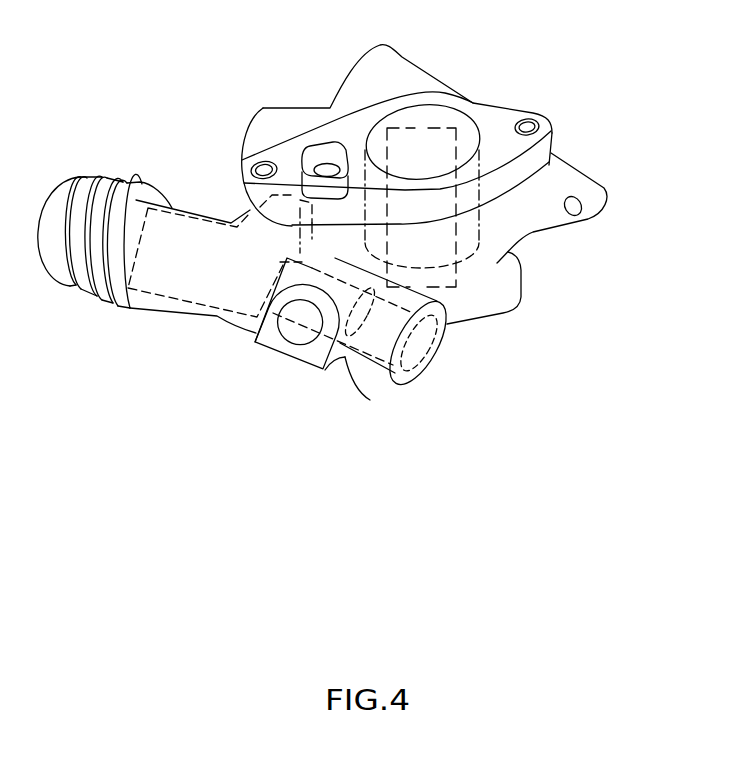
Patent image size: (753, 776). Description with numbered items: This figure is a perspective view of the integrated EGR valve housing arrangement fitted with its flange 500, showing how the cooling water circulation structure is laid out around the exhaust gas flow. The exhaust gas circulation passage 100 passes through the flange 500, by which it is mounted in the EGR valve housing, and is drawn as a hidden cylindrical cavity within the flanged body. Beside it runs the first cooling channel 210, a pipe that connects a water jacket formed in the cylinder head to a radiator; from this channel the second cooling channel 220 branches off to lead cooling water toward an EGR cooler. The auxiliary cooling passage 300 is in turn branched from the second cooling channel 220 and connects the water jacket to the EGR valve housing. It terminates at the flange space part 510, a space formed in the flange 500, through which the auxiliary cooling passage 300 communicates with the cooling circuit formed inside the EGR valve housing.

The exhaust gas circulation passage 100 is at (442, 122).
The first cooling channel 210 is at (163, 308).
The second cooling channel 220 is at (358, 353).
The auxiliary cooling passage 300 is at (247, 160).
The flange 500 is at (568, 126).
The flange space part 510 is at (327, 156).